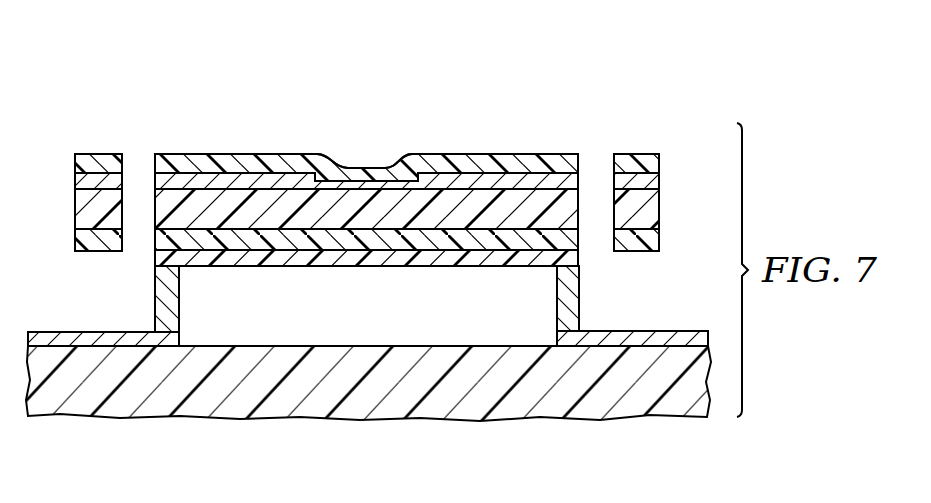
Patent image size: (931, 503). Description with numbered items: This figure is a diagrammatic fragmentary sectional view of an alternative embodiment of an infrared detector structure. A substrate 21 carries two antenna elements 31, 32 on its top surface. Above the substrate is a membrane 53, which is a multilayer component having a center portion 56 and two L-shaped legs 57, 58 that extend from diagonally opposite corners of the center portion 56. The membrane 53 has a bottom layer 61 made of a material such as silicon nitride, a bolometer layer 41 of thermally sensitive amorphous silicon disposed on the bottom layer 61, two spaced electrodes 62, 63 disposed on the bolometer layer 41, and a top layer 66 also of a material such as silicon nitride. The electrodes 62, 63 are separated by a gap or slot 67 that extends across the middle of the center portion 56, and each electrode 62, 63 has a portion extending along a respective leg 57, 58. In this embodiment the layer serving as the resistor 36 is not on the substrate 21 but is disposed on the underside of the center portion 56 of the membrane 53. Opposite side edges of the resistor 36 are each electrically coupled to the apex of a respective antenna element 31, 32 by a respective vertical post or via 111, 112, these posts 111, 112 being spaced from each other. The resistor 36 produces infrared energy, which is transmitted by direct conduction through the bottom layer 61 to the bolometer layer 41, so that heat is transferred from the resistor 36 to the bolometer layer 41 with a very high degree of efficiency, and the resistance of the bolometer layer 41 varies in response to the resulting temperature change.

The substrate 21 is at (618, 412).
The antenna element 31 is at (72, 338).
The antenna element 32 is at (687, 338).
The resistor 36 is at (450, 257).
The bolometer layer 41 is at (253, 220).
The membrane 53 is at (366, 181).
The center portion 56 is at (488, 146).
The L-shaped leg 57 is at (68, 174).
The L-shaped leg 58 is at (665, 168).
The bottom layer 61 is at (78, 242).
The electrode 62 is at (80, 180).
The electrode 63 is at (652, 178).
The top layer 66 is at (78, 163).
The slot 67 is at (333, 167).
The post 111 is at (162, 292).
The post 112 is at (573, 302).